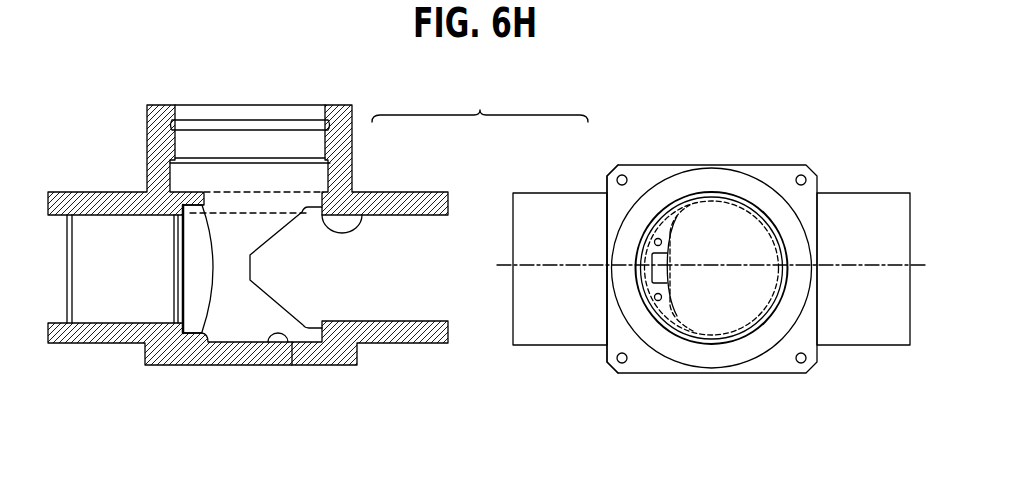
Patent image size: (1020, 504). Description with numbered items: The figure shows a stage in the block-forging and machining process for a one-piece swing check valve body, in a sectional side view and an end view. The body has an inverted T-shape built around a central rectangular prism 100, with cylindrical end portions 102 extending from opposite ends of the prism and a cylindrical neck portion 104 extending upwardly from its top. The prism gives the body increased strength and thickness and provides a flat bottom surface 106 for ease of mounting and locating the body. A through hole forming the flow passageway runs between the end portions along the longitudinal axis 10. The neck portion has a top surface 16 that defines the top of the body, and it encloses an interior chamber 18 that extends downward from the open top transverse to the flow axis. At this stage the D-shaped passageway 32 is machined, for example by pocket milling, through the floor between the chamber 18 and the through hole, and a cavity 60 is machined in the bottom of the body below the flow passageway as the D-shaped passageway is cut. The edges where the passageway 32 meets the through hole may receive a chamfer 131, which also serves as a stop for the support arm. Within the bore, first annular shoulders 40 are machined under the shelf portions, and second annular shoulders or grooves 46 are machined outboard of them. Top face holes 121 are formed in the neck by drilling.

The longitudinal axis 10 is at (917, 266).
The top surface 16 is at (620, 197).
The interior chamber 18 is at (240, 178).
The D-shaped passageway 32 is at (268, 197).
The first annular shoulders 40 is at (187, 232).
The second annular shoulders 46 is at (173, 272).
The cavity 60 is at (268, 338).
The rectangular prism 100 is at (660, 167).
The cylindrical end portions 102 is at (78, 346).
The cylindrical neck portion 104 is at (147, 148).
The flat bottom surface 106 is at (220, 367).
The top face holes 121 is at (623, 175).
The chamfer 131 is at (350, 228).